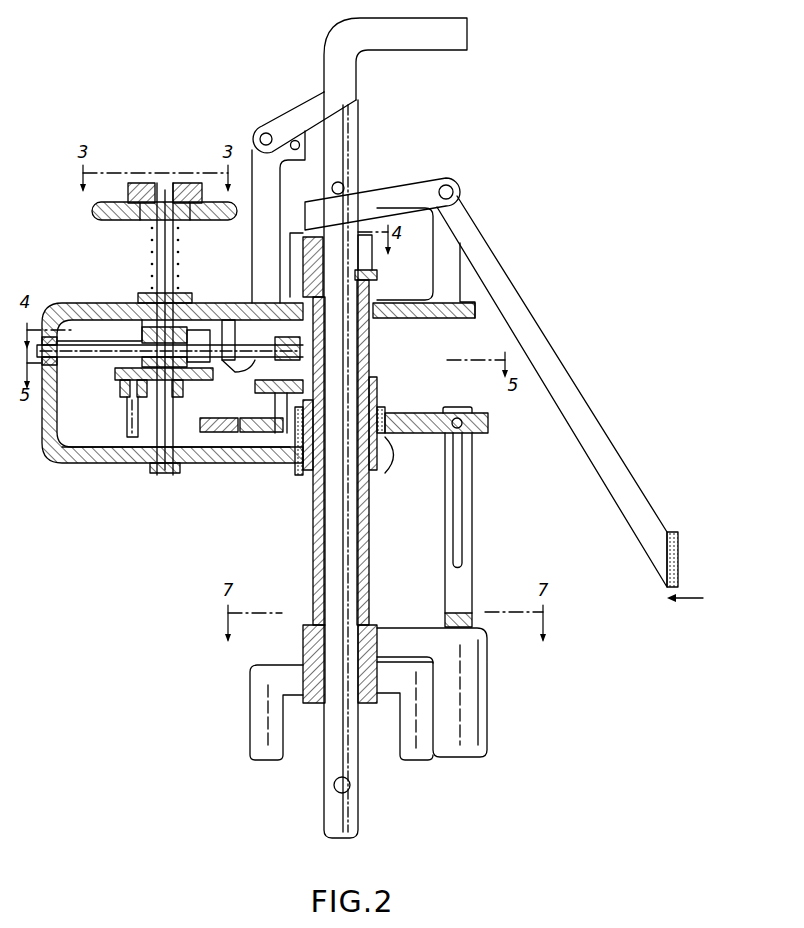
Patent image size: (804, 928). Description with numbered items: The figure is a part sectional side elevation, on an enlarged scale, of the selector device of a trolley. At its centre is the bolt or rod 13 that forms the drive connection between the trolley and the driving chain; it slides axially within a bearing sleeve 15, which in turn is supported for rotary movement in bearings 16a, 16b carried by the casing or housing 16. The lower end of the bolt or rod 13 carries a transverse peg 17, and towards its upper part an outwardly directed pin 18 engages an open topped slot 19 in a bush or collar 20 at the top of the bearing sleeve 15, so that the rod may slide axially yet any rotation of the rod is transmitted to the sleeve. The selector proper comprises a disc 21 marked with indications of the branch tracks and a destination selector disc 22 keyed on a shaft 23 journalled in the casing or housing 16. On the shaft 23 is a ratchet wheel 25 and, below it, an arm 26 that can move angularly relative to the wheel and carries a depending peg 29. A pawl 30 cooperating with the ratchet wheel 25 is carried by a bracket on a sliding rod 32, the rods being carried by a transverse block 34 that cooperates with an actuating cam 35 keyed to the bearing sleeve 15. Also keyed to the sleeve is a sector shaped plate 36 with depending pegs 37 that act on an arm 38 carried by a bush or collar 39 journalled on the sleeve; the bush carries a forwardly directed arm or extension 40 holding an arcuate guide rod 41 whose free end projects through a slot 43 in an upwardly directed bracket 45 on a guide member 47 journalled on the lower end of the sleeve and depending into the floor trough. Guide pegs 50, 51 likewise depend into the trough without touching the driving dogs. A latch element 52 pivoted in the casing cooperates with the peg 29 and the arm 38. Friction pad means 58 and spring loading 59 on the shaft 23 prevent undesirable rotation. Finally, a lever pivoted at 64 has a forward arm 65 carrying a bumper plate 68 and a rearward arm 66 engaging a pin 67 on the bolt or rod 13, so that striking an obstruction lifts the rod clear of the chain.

The bolt or rod 13 is at (360, 393).
The bearing sleeve 15 is at (367, 520).
The casing or housing 16 is at (243, 303).
The bearing 16a is at (378, 318).
The bearing 16b is at (308, 473).
The transverse peg 17 is at (334, 786).
The outwardly directed pin 18 is at (375, 278).
The open topped slot 19 is at (375, 260).
The bush or collar 20 is at (300, 240).
The disc 21 is at (142, 185).
The destination selector disc 22 is at (92, 214).
The shaft 23 is at (173, 253).
The ratchet wheel 25 is at (115, 377).
The arm 26 is at (122, 390).
The depending peg 29 is at (128, 424).
The pawl 30 is at (207, 306).
The rod 32 is at (252, 345).
The transverse block 34 is at (268, 360).
The actuating cam 35 is at (265, 387).
The sector shaped plate 36 is at (253, 397).
The depending pegs 37 is at (276, 440).
The arm 38 is at (247, 437).
The bush or collar 39 is at (382, 410).
The arm or extension 40 is at (427, 413).
The arcuate guide rod 41 is at (462, 426).
The slot 43 is at (462, 508).
The upwardly directed bracket 45 is at (475, 548).
The guide member 47 is at (478, 690).
The guide peg 50 is at (258, 745).
The guide peg 51 is at (410, 750).
The latch element 52 is at (213, 430).
The friction pad means 58 is at (148, 335).
The spring loading 59 is at (153, 238).
The pivot 64 is at (456, 186).
The lever arm 65 is at (548, 342).
The lever arm 66 is at (408, 190).
The pin 67 is at (345, 186).
The bumper plate 68 is at (678, 533).